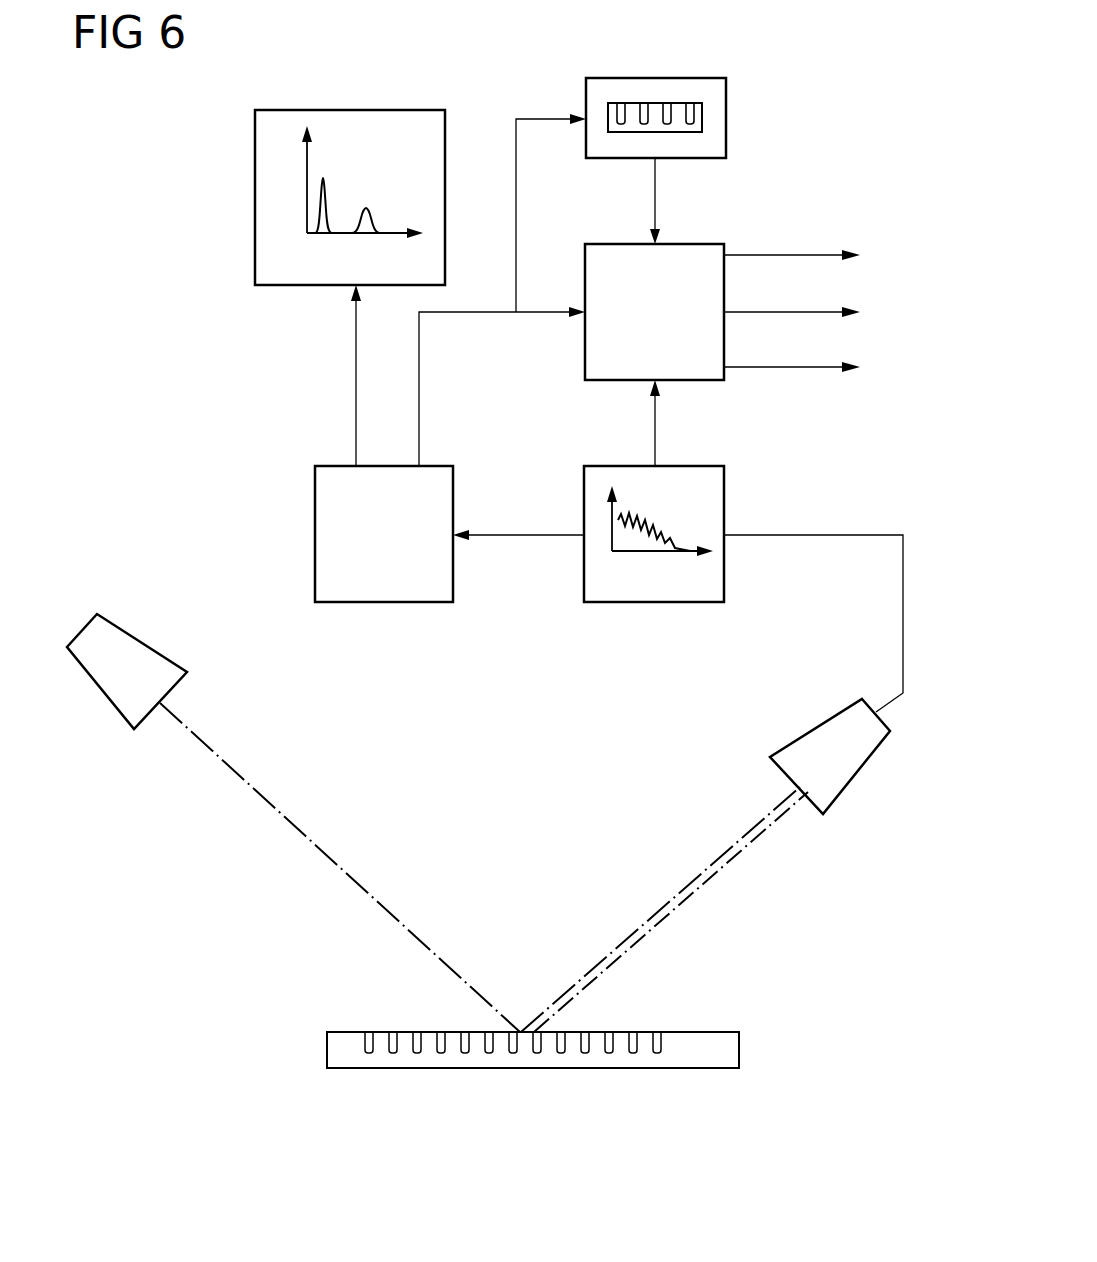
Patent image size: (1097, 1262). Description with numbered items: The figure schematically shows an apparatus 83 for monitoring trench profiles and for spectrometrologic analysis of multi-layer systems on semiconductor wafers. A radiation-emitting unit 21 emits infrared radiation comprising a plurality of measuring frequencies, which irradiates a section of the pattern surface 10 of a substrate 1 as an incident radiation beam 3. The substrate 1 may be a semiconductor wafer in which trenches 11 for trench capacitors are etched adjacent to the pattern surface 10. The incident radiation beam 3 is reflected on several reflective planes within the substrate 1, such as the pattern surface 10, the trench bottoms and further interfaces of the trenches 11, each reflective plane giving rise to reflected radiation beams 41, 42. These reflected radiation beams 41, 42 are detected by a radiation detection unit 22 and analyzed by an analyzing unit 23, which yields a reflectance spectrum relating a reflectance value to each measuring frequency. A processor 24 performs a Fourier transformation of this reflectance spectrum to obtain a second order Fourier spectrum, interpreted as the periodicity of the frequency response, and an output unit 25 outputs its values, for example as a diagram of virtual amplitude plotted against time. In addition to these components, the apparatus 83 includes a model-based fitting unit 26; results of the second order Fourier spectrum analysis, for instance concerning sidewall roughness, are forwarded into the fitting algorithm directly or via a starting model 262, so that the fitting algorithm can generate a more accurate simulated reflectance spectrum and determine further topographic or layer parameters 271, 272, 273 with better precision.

The substrate 1 is at (555, 1044).
The incident radiation beam 3 is at (288, 812).
The pattern surface 10 is at (697, 1026).
The trenches 11 is at (657, 1055).
The radiation-emitting unit 21 is at (143, 641).
The radiation detection unit 22 is at (862, 766).
The analyzing unit 23 is at (654, 602).
The processor 24 is at (383, 602).
The output unit 25 is at (255, 200).
The model-based fitting unit 26 is at (615, 380).
The reflected radiation beam 41 is at (728, 856).
The reflected radiation beam 42 is at (631, 930).
The apparatus 83 is at (190, 336).
The starting model 262 is at (657, 78).
The topographic or layer parameter 271 is at (790, 252).
The topographic or layer parameter 272 is at (802, 310).
The topographic or layer parameter 273 is at (773, 370).